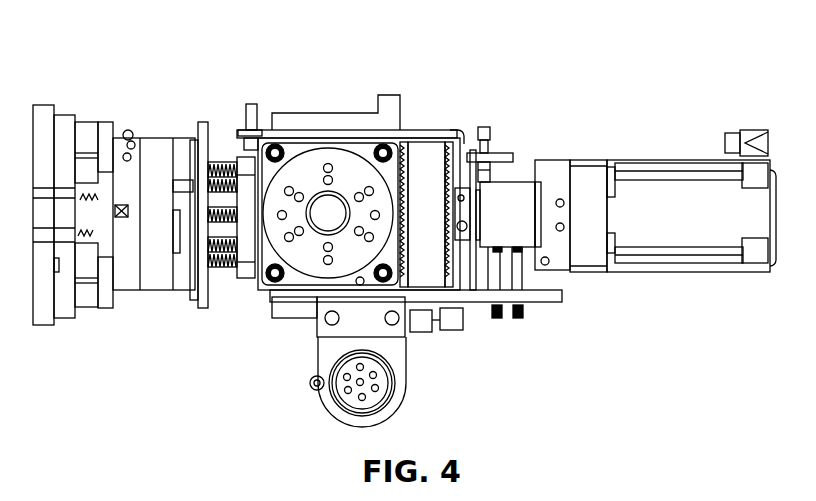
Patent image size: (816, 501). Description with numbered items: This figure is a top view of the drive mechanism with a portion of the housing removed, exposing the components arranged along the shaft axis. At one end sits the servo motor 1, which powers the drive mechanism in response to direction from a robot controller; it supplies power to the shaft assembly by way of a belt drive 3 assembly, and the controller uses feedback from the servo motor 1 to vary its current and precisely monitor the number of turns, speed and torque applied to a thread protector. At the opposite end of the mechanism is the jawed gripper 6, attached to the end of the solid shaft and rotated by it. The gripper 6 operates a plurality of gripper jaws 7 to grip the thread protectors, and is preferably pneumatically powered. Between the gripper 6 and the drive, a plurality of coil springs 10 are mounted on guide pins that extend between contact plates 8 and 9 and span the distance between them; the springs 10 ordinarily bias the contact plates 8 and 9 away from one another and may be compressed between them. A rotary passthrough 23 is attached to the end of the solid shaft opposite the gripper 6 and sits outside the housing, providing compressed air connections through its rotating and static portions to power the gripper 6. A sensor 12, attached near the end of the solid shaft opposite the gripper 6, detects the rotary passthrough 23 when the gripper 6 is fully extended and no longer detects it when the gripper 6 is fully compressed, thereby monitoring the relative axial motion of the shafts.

The servo motor 1 is at (700, 257).
The belt drive 3 is at (436, 142).
The jawed gripper 6 is at (97, 128).
The gripper jaws 7 is at (47, 107).
The contact plate 8 is at (246, 268).
The contact plate 9 is at (200, 305).
The coil springs 10 is at (220, 160).
The sensor 12 is at (487, 140).
The rotary passthrough 23 is at (548, 193).